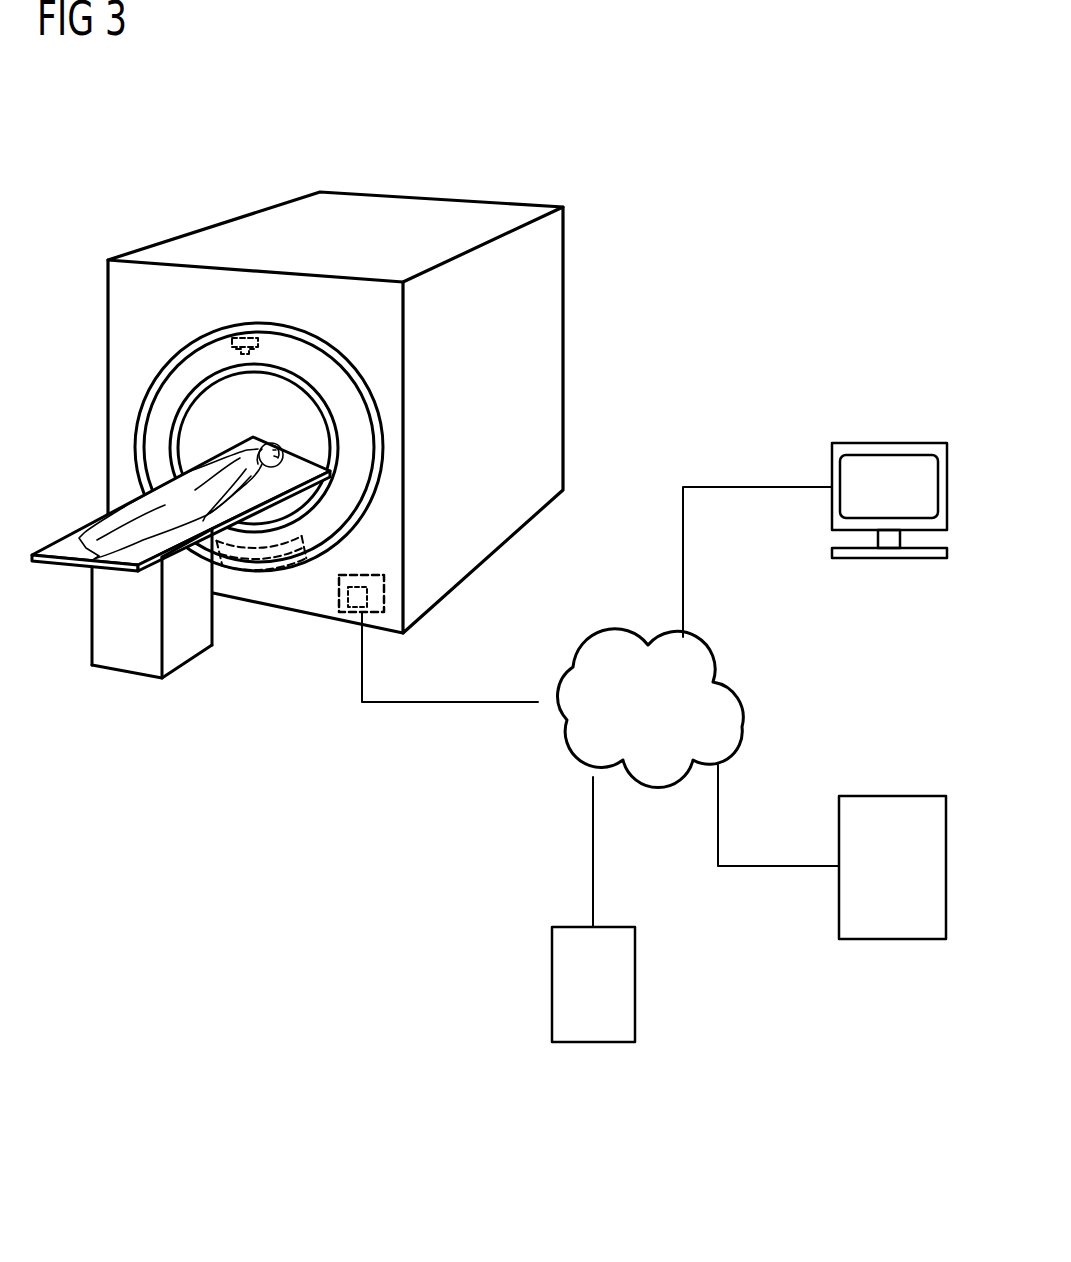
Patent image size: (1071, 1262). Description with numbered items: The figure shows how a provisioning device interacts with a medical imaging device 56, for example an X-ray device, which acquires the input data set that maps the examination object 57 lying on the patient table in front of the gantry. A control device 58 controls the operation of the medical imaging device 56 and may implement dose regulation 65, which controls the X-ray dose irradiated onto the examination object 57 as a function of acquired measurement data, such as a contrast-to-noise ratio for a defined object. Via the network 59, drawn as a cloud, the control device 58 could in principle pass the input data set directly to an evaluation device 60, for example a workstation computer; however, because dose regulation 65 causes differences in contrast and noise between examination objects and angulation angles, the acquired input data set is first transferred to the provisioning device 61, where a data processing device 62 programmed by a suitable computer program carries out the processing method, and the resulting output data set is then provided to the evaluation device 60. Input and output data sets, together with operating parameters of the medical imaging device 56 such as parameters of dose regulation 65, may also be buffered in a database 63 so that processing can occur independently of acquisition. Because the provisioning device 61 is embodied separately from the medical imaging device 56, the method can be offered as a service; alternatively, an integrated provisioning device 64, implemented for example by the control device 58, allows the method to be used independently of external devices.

The medical imaging device 56 is at (466, 201).
The examination object 57 is at (222, 452).
The control device 58 is at (435, 609).
The provisioning device 64 is at (385, 595).
The dose regulation 65 is at (352, 607).
The network 59 is at (782, 692).
The evaluation device 60 is at (887, 442).
The provisioning device 61 is at (892, 910).
The data processing device 62 is at (893, 942).
The database 63 is at (593, 1043).